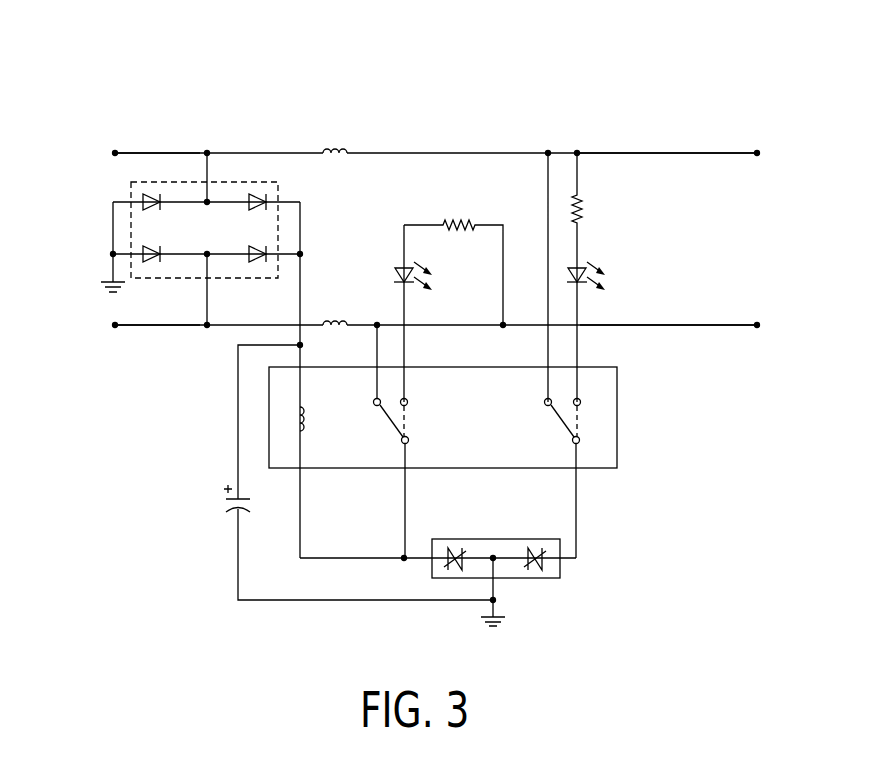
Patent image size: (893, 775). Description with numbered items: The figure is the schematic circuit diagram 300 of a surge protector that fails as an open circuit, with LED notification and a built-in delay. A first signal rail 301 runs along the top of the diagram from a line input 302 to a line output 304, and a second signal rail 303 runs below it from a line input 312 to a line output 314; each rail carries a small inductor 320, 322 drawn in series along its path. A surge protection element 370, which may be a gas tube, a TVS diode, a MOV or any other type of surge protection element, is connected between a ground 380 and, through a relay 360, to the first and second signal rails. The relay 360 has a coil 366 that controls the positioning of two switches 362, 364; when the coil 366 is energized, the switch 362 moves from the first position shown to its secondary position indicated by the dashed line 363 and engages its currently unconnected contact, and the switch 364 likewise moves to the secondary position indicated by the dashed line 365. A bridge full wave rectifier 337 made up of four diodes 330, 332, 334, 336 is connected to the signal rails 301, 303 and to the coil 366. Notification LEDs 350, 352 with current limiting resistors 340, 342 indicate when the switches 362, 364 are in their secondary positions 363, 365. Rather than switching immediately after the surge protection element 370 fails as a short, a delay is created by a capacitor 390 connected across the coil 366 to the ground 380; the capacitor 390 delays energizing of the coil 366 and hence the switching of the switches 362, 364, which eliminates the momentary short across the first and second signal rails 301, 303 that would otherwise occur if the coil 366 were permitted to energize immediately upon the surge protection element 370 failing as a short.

The schematic circuit diagram 300 is at (215, 74).
The first signal rail 301 is at (460, 139).
The line input 302 is at (162, 153).
The second signal rail 303 is at (680, 347).
The line output 304 is at (710, 153).
The line input 312 is at (160, 326).
The line output 314 is at (712, 325).
The first inductor 320 is at (337, 152).
The second inductor 322 is at (345, 323).
The diode 330 is at (143, 202).
The diode 332 is at (264, 201).
The diode 334 is at (160, 254).
The diode 336 is at (256, 262).
The bridge full wave rectifier 337 is at (213, 355).
The current limiting resistor 340 is at (463, 225).
The current limiting resistor 342 is at (578, 203).
The notification LED 350 is at (402, 267).
The notification LED 352 is at (580, 266).
The relay 360 is at (475, 441).
The switch 362 is at (560, 423).
The dashed line 363 is at (576, 418).
The switch 364 is at (388, 424).
The dashed line 365 is at (407, 401).
The coil 366 is at (303, 424).
The surge protection element 370 is at (562, 570).
The ground 380 is at (110, 295).
The capacitor 390 is at (236, 509).